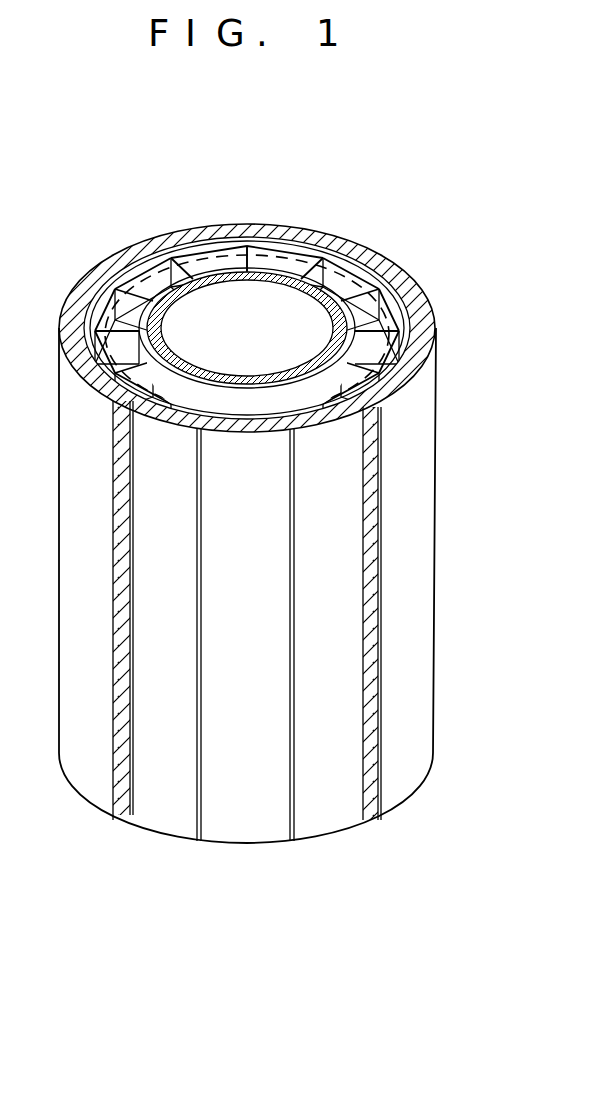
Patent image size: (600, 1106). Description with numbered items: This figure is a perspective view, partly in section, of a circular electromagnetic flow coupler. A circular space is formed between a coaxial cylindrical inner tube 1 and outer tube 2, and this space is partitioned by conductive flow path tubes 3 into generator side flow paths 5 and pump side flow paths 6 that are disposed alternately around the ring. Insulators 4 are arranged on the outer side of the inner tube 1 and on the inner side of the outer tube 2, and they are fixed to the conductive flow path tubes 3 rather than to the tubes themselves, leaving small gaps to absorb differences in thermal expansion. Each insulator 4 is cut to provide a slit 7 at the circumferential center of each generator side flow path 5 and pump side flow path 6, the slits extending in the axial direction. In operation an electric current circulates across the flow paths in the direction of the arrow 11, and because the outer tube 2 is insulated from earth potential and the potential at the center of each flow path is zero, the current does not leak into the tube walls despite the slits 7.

The inner tube 1 is at (320, 366).
The outer tube 2 is at (378, 256).
The conductive flow path tube 3 is at (185, 266).
The insulator 4 is at (333, 240).
The generator side flow path 5 is at (392, 356).
The pump side flow path 6 is at (370, 316).
The slit 7 is at (291, 838).
The arrow 11 is at (366, 298).